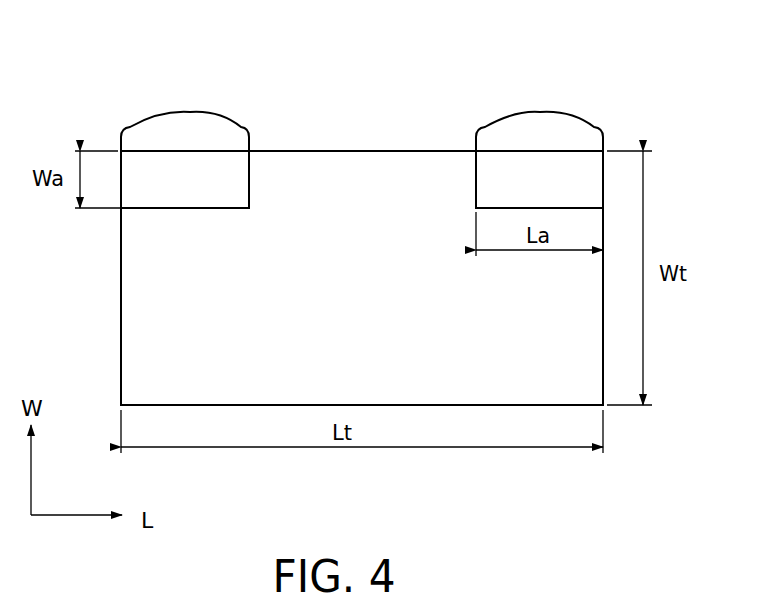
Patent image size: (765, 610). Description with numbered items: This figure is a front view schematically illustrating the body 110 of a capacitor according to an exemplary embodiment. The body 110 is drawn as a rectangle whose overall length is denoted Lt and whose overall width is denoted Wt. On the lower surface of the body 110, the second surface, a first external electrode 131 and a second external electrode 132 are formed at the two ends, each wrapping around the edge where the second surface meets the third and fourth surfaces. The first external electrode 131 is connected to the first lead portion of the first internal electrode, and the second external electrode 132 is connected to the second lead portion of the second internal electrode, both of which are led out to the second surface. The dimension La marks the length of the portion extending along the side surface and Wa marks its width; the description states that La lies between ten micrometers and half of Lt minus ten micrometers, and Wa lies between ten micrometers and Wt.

The body 110 is at (356, 151).
The first external electrode 131 is at (542, 128).
The second external electrode 132 is at (182, 128).